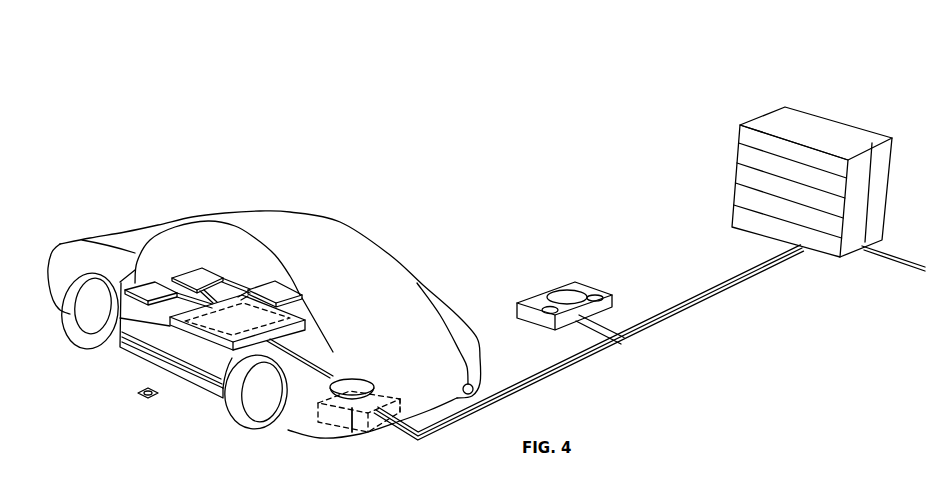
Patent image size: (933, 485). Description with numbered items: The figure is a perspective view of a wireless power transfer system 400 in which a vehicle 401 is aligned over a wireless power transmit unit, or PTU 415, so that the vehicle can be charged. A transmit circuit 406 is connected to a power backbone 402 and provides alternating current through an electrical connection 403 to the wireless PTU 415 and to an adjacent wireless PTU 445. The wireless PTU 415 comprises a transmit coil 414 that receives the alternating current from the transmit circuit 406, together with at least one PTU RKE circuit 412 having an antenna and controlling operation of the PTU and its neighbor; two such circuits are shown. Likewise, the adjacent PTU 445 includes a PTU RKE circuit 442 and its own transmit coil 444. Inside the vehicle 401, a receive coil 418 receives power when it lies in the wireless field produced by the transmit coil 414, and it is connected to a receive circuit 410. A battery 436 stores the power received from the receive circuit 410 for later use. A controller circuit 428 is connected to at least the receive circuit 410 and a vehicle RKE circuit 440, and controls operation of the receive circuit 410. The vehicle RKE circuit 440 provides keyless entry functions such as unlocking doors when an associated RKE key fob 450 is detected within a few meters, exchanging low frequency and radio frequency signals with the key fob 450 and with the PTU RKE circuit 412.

The wireless power transfer system 400 is at (389, 56).
The vehicle 401 is at (128, 237).
The power backbone 402 is at (898, 263).
The electrical connection 403 is at (737, 288).
The transmit circuit 406 is at (763, 115).
The receive circuit 410 is at (253, 329).
The PTU remote keyless entry (RKE) circuit 412 is at (366, 426).
The transmit coil 414 is at (381, 395).
The wireless power transmit unit (PTU) 415 is at (414, 396).
The receive coil 418 is at (350, 382).
The controller circuit 428 is at (200, 268).
The battery 436 is at (130, 298).
The vehicle RKE circuit 440 is at (274, 284).
The PTU RKE circuit 442 is at (612, 311).
The transmit coil 444 is at (583, 290).
The adjacent wireless PTU 445 is at (537, 295).
The RKE key fob 450 is at (153, 400).